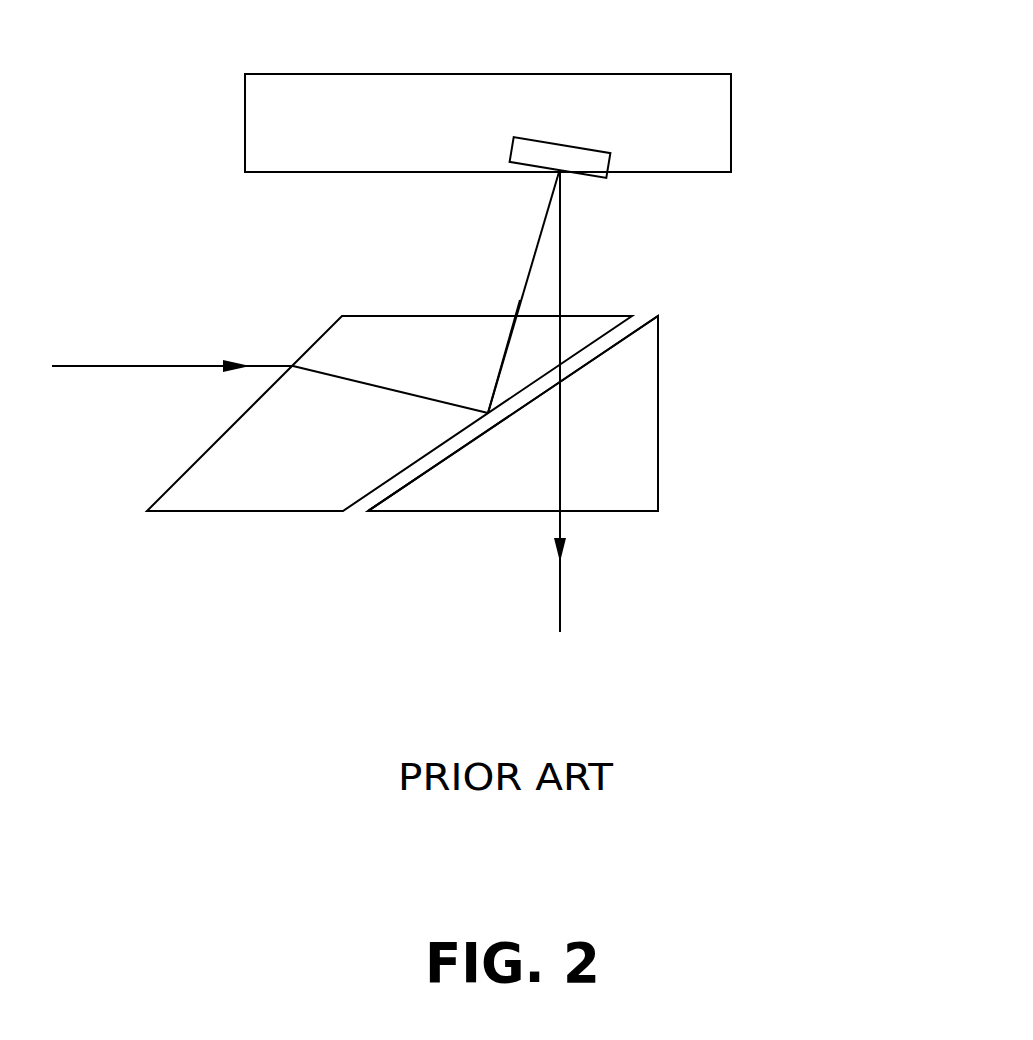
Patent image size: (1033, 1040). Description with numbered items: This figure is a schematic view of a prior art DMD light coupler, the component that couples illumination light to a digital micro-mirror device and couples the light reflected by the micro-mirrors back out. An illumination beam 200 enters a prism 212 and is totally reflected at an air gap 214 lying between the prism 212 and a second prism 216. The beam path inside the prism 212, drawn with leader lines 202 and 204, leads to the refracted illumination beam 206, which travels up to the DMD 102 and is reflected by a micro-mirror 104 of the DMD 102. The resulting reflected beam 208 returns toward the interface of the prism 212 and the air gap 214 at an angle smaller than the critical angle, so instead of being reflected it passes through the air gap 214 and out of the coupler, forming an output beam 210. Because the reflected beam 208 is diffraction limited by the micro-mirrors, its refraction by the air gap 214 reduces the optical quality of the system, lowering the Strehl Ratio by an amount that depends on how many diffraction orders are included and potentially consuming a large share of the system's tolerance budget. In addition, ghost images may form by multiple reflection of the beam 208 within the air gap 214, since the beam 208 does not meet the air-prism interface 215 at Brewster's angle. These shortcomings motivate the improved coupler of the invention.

The DMD 102 is at (731, 74).
The micro-mirror 104 is at (605, 177).
The illumination beam 200 is at (120, 366).
The refracted beam in prism 202 is at (395, 390).
The reflection point at prism interface 204 is at (501, 362).
The refracted illumination beam 206 is at (536, 242).
The reflected beam 208 is at (560, 268).
The output beam 210 is at (556, 578).
The prism 212 is at (193, 462).
The air gap 214 is at (390, 485).
The air-prism interface 215 is at (574, 373).
The prism 216 is at (658, 460).